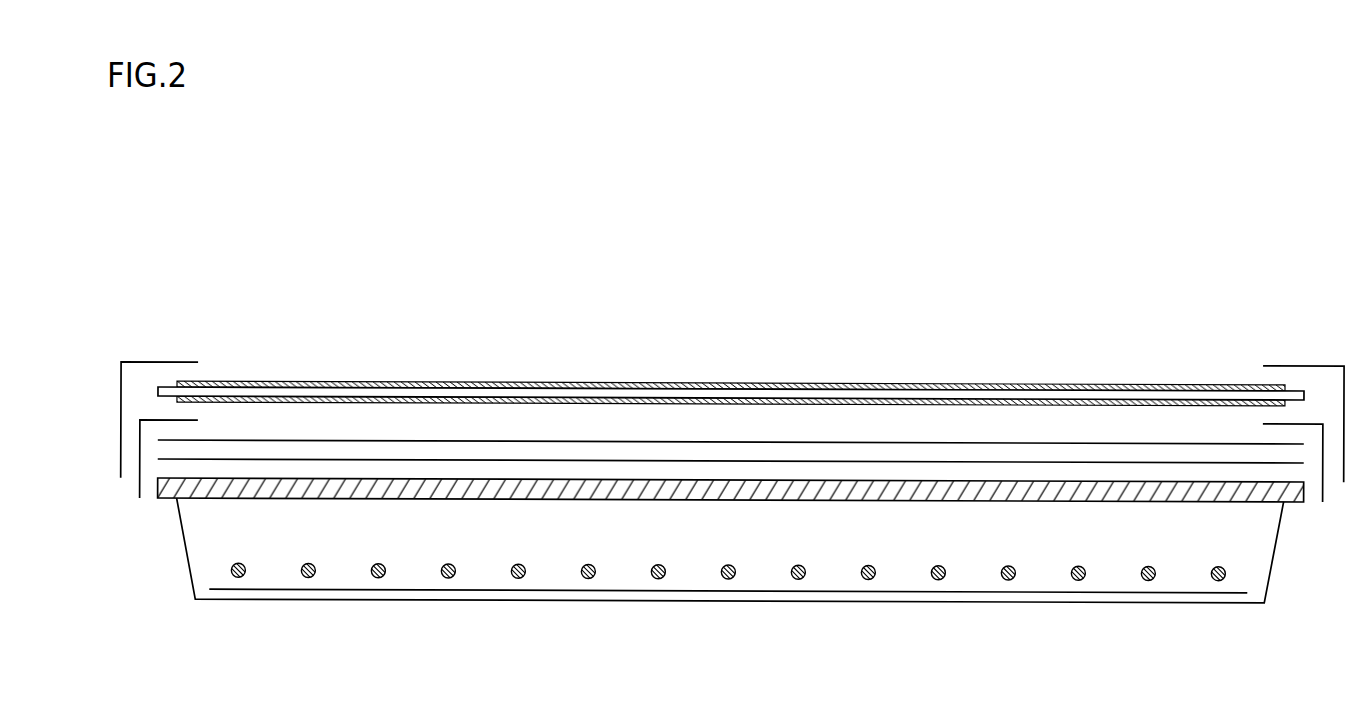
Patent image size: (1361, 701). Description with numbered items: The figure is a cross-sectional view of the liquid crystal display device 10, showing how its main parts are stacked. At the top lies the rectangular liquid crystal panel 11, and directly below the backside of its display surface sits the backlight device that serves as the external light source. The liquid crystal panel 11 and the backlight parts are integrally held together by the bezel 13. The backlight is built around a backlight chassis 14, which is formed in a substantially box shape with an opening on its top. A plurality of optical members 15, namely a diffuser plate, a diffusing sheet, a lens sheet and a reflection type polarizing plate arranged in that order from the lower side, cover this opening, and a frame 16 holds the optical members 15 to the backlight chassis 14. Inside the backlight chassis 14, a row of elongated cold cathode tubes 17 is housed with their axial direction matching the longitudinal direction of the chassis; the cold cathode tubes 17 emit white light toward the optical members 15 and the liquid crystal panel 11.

The liquid crystal display device 10 is at (585, 306).
The liquid crystal panel 11 is at (442, 381).
The bezel 13 is at (165, 362).
The backlight chassis 14 is at (183, 539).
The optical members 15 is at (713, 478).
The frame 16 is at (150, 420).
The cold cathode tubes 17 is at (379, 563).